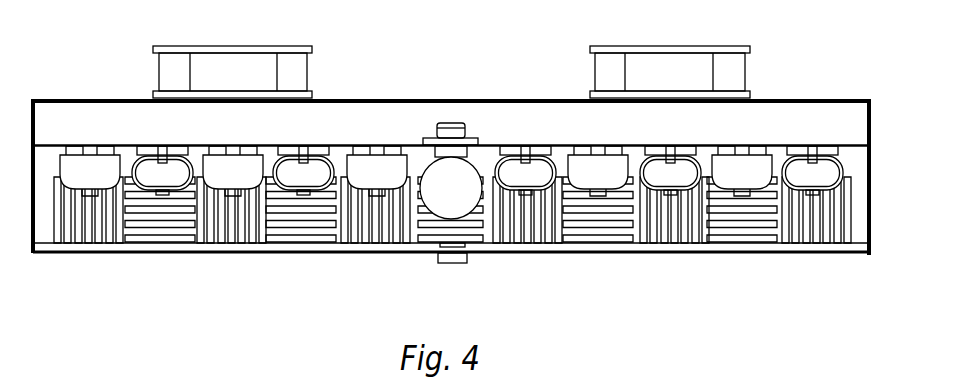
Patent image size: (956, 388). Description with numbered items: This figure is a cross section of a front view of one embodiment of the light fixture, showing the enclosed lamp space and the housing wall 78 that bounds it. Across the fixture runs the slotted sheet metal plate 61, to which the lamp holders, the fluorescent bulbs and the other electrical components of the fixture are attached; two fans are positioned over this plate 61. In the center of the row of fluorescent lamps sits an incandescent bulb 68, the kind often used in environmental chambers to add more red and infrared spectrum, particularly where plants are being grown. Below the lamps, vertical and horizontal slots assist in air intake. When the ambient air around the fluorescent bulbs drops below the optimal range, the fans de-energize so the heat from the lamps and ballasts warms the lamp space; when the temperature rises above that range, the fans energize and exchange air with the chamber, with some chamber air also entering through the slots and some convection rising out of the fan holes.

The metal sheet 61 is at (840, 143).
The incandescent bulbs 68 is at (435, 168).
The housing wall 78 is at (40, 202).